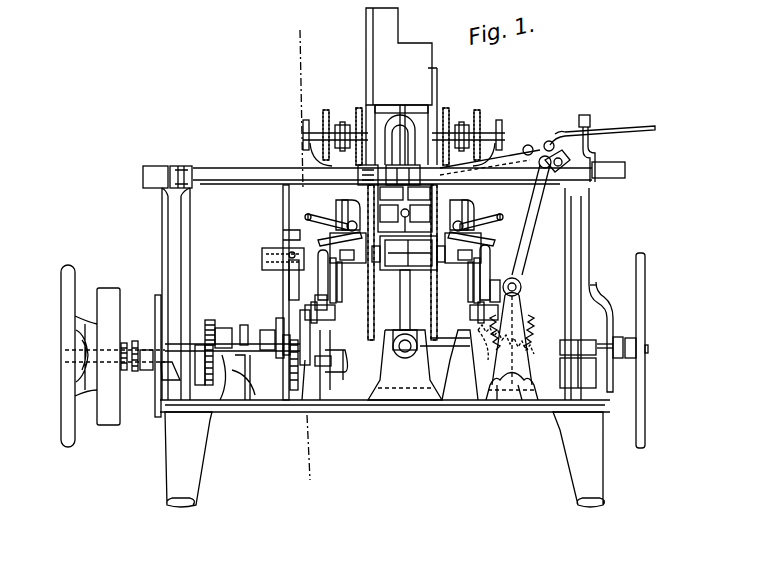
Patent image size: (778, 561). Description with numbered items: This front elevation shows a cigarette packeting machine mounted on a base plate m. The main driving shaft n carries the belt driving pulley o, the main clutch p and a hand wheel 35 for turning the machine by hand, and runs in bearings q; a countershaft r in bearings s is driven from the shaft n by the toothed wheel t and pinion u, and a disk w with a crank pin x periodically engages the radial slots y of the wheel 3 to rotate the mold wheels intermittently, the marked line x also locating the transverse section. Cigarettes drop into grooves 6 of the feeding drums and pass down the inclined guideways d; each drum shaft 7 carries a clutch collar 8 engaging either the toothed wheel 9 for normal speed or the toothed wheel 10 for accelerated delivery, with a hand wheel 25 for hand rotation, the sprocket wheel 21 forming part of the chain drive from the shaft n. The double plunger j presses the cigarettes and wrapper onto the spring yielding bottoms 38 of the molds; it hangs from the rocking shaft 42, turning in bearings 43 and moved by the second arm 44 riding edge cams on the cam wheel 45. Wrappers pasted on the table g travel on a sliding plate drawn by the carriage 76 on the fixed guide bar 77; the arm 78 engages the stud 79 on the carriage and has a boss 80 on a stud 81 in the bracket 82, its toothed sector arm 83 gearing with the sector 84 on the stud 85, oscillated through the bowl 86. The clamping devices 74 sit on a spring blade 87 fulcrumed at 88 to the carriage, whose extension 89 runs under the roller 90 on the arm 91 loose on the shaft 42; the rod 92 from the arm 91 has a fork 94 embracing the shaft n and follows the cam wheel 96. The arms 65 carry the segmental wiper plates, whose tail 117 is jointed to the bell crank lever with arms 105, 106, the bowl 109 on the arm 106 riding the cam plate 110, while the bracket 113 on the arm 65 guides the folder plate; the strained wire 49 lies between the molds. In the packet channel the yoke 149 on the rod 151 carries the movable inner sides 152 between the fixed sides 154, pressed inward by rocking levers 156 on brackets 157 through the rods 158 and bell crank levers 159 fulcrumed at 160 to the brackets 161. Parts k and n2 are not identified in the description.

The line X—X x is at (303, 254).
The grooves 6 is at (418, 62).
The inclined guideways d is at (425, 110).
The sprocket wheel 21 is at (410, 135).
The hand wheel 25 is at (304, 125).
The toothed wheel 10 is at (326, 112).
The shaft 7 is at (342, 128).
The toothed wheel 9 is at (359, 110).
The collar or sleeve 8 is at (350, 142).
The strained wire 49 is at (358, 172).
The rocking shaft 42 is at (143, 174).
The bearings 43 is at (183, 172).
The second arm 44 is at (162, 258).
The rod 92 is at (590, 219).
The cam wheel 96 is at (608, 308).
The base plate m is at (478, 412).
The hand wheel 35 is at (62, 305).
The belt driving pulley o is at (110, 300).
The main clutch p is at (128, 345).
The cam wheel 45 is at (155, 300).
The bearings q is at (163, 362).
The fork 94 is at (608, 376).
The main driving shaft n is at (649, 349).
The pasting table g is at (578, 345).
The backward extension 89 is at (628, 128).
The fulcrum 88 is at (544, 136).
The spring blade 87 is at (524, 138).
The roller 90 is at (590, 122).
The arm 91 is at (587, 145).
The carriage 76 is at (558, 147).
The fixed guide bar 77 is at (612, 160).
The clamping devices 74 is at (486, 178).
The pin or stud 79 is at (530, 170).
The arm 78 is at (528, 236).
The rods 158 is at (490, 262).
The spring yielding bottoms 38 is at (405, 208).
The bracket 113 is at (362, 200).
The yoke 149 is at (380, 280).
The movable inner sides 152 is at (412, 245).
The fixed sides 154 is at (396, 253).
The rod 151 is at (410, 302).
The bell crank lever arm 105 is at (345, 208).
The bell crank lever arm 106 is at (335, 215).
The bowl 109 is at (310, 220).
The cam plate 110 is at (318, 232).
The tail 117 is at (335, 240).
The arms 65 is at (405, 248).
The wheel 3 is at (283, 198).
The radial slots y is at (283, 215).
The double plunger j is at (262, 258).
The rod k is at (294, 280).
The rocking levers 156 is at (405, 280).
The brackets 157 is at (405, 283).
The bell crank levers 159 is at (490, 299).
The fulcrum 160 is at (334, 315).
The boss 80 is at (519, 289).
The stud 81 is at (516, 294).
The toothed sector arm 83 is at (524, 318).
The toothed sector 84 is at (525, 338).
The bracket 82 is at (530, 373).
The stud 85 is at (525, 400).
The bowl 86 is at (497, 400).
The brackets 161 is at (440, 374).
The pinion u is at (207, 320).
The bearings s is at (220, 328).
The countershaft r is at (242, 324).
The toothed wheel t is at (205, 375).
The disk w is at (280, 318).
The support n2 is at (284, 365).